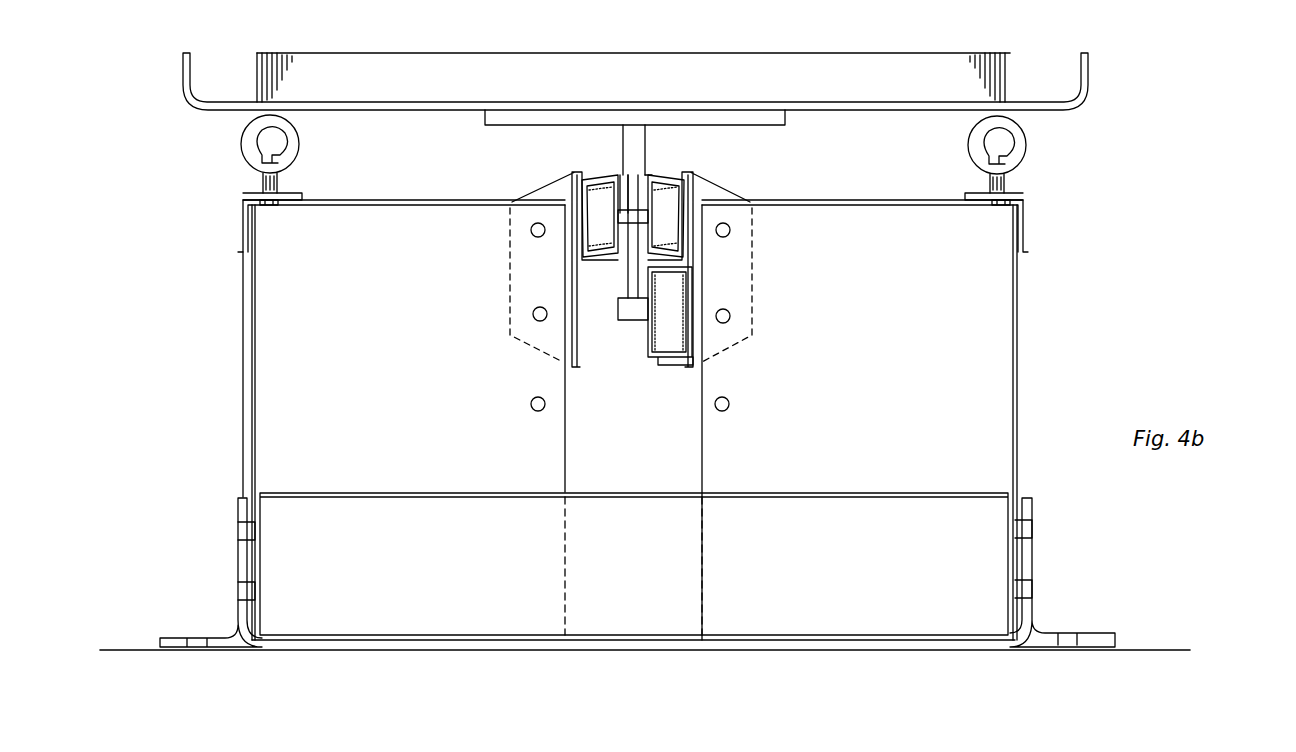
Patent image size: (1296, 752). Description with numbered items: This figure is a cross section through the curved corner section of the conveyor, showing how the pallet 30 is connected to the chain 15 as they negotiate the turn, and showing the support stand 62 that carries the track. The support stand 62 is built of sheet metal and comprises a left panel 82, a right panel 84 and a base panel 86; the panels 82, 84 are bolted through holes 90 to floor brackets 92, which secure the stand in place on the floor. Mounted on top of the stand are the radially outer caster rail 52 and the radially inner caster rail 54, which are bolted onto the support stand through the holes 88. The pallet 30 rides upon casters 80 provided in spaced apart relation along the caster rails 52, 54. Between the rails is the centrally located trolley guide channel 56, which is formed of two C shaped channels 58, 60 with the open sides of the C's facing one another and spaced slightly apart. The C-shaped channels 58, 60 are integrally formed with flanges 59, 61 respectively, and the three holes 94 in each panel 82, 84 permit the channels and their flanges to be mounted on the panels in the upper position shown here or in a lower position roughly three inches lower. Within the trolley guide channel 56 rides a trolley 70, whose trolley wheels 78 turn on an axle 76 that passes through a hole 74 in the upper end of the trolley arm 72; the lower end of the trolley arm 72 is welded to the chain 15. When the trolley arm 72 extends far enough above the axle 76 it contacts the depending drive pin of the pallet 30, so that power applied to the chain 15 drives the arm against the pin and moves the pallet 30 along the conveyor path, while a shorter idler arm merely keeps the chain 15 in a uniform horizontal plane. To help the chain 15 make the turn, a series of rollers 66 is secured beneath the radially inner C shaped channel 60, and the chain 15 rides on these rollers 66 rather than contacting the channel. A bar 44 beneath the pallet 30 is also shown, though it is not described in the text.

The pallet 30 is at (450, 105).
The support bar 44 is at (626, 137).
The radially outer caster rail 52 is at (243, 238).
The radially inner caster rail 54 is at (1025, 238).
The trolley guide channel 56 is at (692, 162).
The C shaped channel 58 is at (575, 172).
The flange 59 is at (530, 290).
The C shaped channel 60 is at (710, 172).
The flange 61 is at (732, 280).
The support stand 62 is at (246, 396).
The rollers 66 is at (656, 362).
The trolley 70 is at (617, 265).
The trolley arm 72 is at (632, 283).
The hole 74 is at (668, 168).
The axle 76 is at (623, 212).
The trolley wheels 78 is at (612, 225).
The casters 80 is at (298, 146).
The left panel 82 is at (396, 377).
The right panel 84 is at (918, 377).
The base panel 86 is at (660, 550).
The holes 88 is at (272, 206).
The holes 90 is at (255, 534).
The floor brackets 92 is at (216, 640).
The holes 94 is at (531, 230).
The chain 15 is at (629, 320).